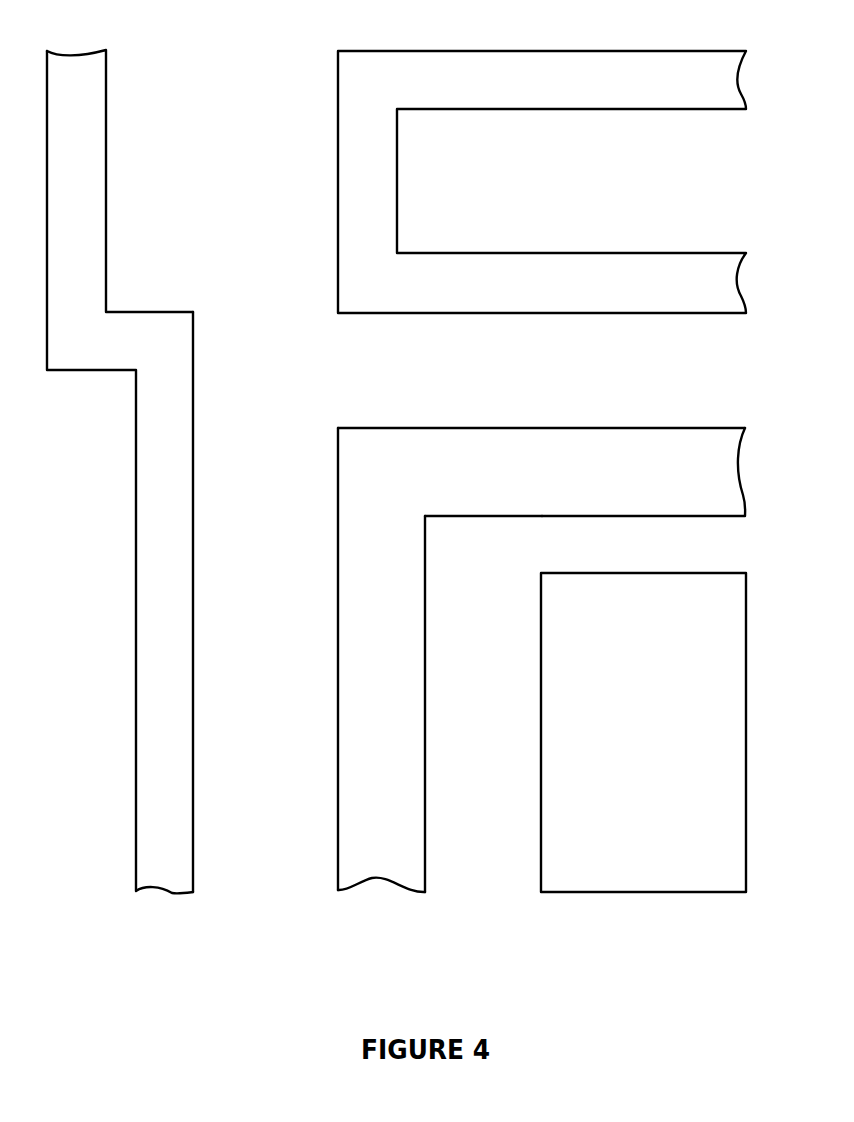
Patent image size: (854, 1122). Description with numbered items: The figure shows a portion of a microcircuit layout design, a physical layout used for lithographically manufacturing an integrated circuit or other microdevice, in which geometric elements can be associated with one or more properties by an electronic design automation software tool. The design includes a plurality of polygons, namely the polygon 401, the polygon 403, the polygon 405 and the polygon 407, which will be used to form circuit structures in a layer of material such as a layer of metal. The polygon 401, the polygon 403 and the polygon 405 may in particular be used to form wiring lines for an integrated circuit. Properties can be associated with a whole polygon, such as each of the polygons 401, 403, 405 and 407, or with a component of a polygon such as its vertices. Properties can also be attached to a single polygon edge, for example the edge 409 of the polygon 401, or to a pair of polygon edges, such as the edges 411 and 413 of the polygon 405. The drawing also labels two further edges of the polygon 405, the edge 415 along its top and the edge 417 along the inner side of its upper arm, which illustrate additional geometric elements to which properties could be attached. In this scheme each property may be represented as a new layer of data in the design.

The polygon 401 is at (154, 471).
The polygon 403 is at (483, 278).
The polygon 405 is at (515, 633).
The polygon 407 is at (587, 862).
The edge 409 is at (194, 479).
The edge 411 is at (338, 748).
The edge 413 is at (426, 748).
The top edge of L-shaped segment upper arm 415 is at (553, 427).
The inner edge of L-shaped segment upper arm 417 is at (542, 516).